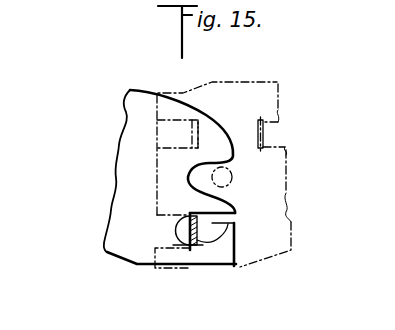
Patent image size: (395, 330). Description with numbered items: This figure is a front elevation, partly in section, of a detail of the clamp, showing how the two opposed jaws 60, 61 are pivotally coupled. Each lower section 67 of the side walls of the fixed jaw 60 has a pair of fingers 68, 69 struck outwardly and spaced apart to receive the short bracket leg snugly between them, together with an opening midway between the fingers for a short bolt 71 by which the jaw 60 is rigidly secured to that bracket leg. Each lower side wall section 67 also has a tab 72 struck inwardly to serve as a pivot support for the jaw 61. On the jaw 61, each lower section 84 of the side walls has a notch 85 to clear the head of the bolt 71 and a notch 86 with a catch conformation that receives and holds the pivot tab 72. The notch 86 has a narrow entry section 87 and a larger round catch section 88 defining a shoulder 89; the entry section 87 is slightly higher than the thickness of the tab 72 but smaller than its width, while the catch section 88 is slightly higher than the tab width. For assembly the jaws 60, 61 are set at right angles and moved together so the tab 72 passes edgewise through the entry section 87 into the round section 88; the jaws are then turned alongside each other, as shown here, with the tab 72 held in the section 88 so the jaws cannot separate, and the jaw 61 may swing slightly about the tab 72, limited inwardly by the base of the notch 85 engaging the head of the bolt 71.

The jaw 60 is at (276, 226).
The jaw 61 is at (140, 128).
The lower section of side wall 67 is at (168, 275).
The finger 68 is at (198, 132).
The finger 69 is at (265, 133).
The bolt 71 is at (231, 173).
The tab 72 is at (220, 236).
The lower section of side wall 84 is at (121, 211).
The notch 85 is at (188, 180).
The notch 86 is at (178, 230).
The narrow entry section 87 is at (237, 212).
The round catch section 88 is at (178, 225).
The shoulder 89 is at (237, 231).